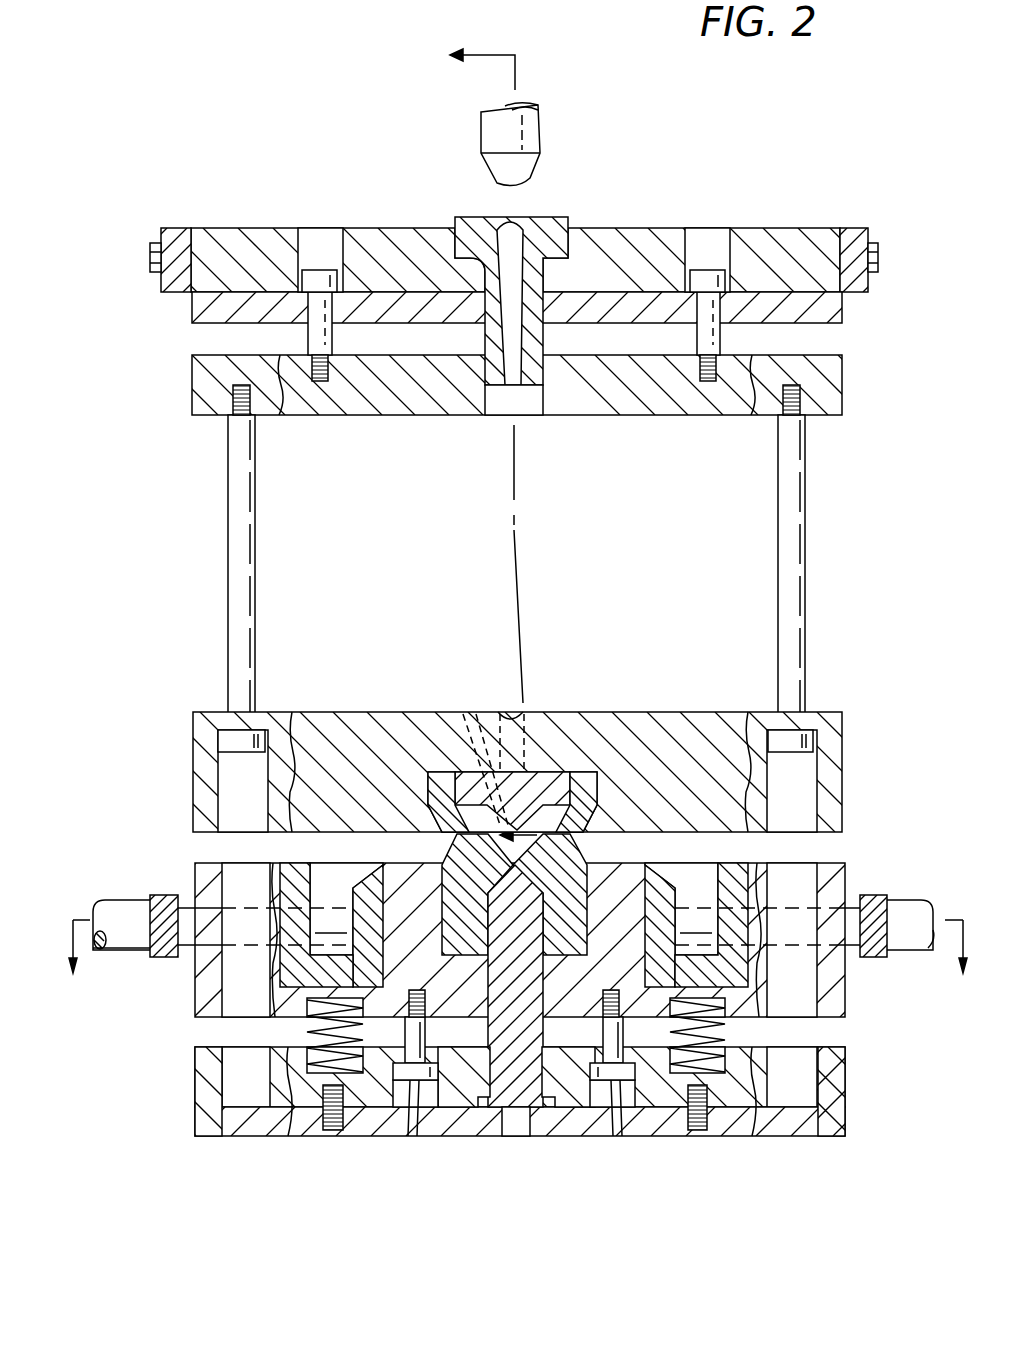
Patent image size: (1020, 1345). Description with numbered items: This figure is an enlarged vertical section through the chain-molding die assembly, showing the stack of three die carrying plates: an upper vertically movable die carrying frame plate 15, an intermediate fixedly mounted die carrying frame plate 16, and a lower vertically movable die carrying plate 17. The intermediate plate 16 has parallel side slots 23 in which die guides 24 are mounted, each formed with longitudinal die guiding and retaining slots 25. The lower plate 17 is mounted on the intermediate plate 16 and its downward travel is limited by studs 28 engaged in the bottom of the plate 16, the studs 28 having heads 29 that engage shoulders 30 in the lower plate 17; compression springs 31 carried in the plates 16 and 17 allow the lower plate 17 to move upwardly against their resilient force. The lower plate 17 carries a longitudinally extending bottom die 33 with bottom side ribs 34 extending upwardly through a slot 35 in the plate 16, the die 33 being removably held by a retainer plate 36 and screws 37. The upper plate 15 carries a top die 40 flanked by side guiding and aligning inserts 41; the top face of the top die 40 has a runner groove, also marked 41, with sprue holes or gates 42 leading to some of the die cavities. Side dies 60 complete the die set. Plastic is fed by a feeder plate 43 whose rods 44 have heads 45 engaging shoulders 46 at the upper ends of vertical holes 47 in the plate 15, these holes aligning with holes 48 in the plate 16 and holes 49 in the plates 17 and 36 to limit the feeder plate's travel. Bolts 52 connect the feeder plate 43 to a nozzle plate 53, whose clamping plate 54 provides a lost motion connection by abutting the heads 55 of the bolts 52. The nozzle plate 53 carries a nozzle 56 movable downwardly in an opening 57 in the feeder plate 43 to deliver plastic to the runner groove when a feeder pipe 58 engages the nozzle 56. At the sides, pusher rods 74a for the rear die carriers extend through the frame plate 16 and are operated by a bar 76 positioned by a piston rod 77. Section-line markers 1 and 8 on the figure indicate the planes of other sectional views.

The section line 1- 1 is at (520, 924).
The section line 8- 8 is at (478, 439).
The upper vertically movable die carrying frame plate 15 is at (845, 722).
The intermediate fixedly mounted die carrying frame plate 16 is at (843, 1018).
The lower vertically movable die carrying plate 17 is at (845, 1050).
The side slots 23 is at (372, 896).
The die guides 24 is at (290, 870).
The die guiding and retaining slots 25 is at (318, 878).
The studs 28 is at (410, 1025).
The heads 29 is at (418, 1128).
The shoulders 30 is at (428, 1052).
The compression springs 31 is at (318, 1040).
The bottom die 33 is at (503, 1110).
The bottom side ribs 34 is at (480, 1110).
The slot 35 is at (528, 1115).
The retainer plate 36 is at (748, 1130).
The screws 37 is at (340, 1138).
The top die 40 is at (556, 772).
The side guiding and aligning inserts 41 is at (524, 714).
The sprue holes or gates 42 is at (490, 722).
The feeder plate 43 is at (836, 410).
The rods 44 is at (258, 500).
The heads 45 is at (218, 742).
The shoulders 46 is at (289, 716).
The vertical holes 47 is at (222, 776).
The holes 48 is at (238, 872).
The holes 49 is at (226, 1085).
The bolts 52 is at (336, 343).
The nozzle plate 53 is at (784, 232).
The clamping plate 54 is at (838, 318).
The heads 55 is at (322, 272).
The nozzle 56 is at (549, 216).
The opening 57 is at (522, 418).
The feeder pipe 58 is at (542, 140).
The side dies 60 is at (447, 865).
The pusher rods 74a is at (195, 905).
The bar 76 is at (163, 958).
The piston rod 77 is at (120, 948).